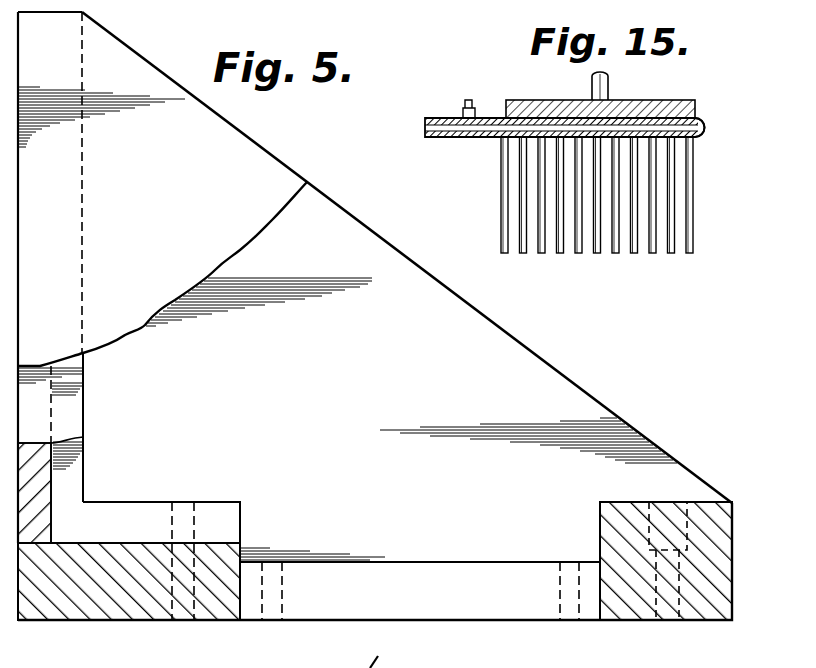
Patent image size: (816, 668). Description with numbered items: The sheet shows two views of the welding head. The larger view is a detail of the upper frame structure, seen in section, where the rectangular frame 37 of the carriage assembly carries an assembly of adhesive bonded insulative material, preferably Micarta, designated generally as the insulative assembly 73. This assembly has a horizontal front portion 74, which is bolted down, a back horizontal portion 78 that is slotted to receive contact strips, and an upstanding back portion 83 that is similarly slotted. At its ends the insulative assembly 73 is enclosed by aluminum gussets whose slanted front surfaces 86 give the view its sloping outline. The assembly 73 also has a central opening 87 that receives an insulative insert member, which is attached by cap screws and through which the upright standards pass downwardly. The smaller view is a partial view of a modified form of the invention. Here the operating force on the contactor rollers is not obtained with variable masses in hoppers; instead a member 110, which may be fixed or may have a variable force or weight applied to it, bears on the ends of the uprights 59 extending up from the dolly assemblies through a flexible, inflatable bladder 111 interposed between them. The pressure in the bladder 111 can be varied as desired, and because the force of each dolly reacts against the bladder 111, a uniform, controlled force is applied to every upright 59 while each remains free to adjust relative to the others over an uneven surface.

In FIG. 5, the slanted front surface 86 is at (346, 370).
In FIG. 5, the upstanding back portion 83 is at (68, 12).
In FIG. 5, the rectangular frame 37 is at (593, 394).
In FIG. 5, the back horizontal portion 78 is at (212, 510).
In FIG. 5, the insulative assembly 73 is at (190, 621).
In FIG. 5, the central opening 87 is at (599, 600).
In FIG. 5, the horizontal front portion 74 is at (653, 621).
In FIG. 15, the uprights 59 is at (700, 173).
In FIG. 15, the member 110 is at (662, 100).
In FIG. 15, the flexible inflatable bladder 111 is at (706, 127).